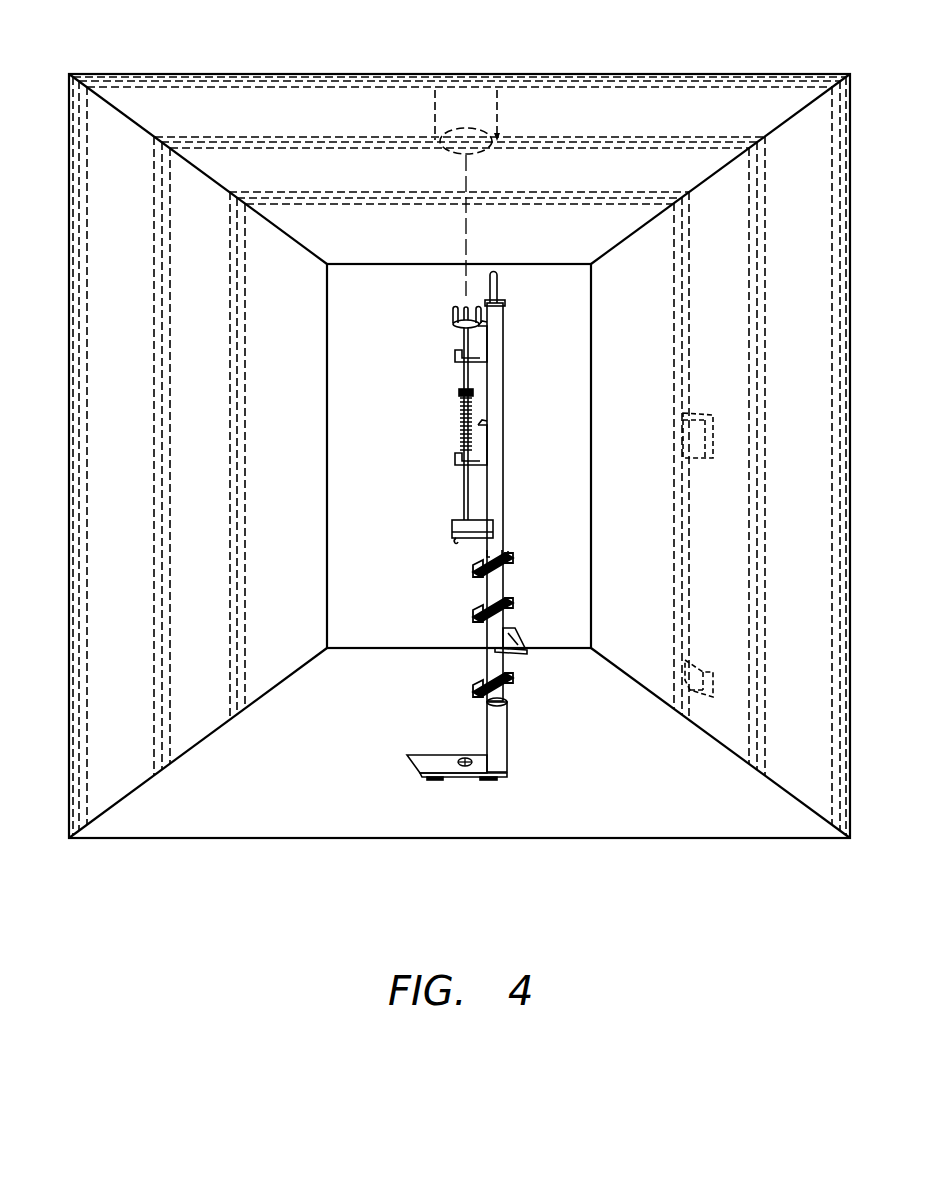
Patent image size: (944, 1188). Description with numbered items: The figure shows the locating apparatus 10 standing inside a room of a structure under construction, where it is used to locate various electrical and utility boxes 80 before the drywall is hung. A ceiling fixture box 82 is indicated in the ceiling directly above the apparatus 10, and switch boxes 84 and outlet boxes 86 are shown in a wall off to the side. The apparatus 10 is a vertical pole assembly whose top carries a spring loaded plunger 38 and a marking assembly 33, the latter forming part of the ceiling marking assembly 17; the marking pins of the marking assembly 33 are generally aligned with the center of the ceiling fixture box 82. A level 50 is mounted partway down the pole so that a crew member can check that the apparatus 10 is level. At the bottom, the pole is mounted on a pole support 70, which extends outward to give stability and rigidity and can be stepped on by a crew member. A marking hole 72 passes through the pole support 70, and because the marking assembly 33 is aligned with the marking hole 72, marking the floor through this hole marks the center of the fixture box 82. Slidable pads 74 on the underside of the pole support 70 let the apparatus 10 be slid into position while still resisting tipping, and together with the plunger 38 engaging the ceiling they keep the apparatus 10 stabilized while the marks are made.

The electrical and utility boxes 80 is at (452, 45).
The ceiling fixture box 82 is at (488, 150).
The apparatus 10 is at (427, 332).
The spring loaded plunger 38 is at (498, 282).
The marking assembly 33 is at (450, 296).
The ceiling marking assembly 17 is at (447, 322).
The level 50 is at (527, 640).
The pole support 70 is at (409, 762).
The marking hole 72 is at (460, 757).
The slidable pads 74 is at (490, 779).
The switch boxes 84 is at (693, 458).
The outlet boxes 86 is at (695, 660).